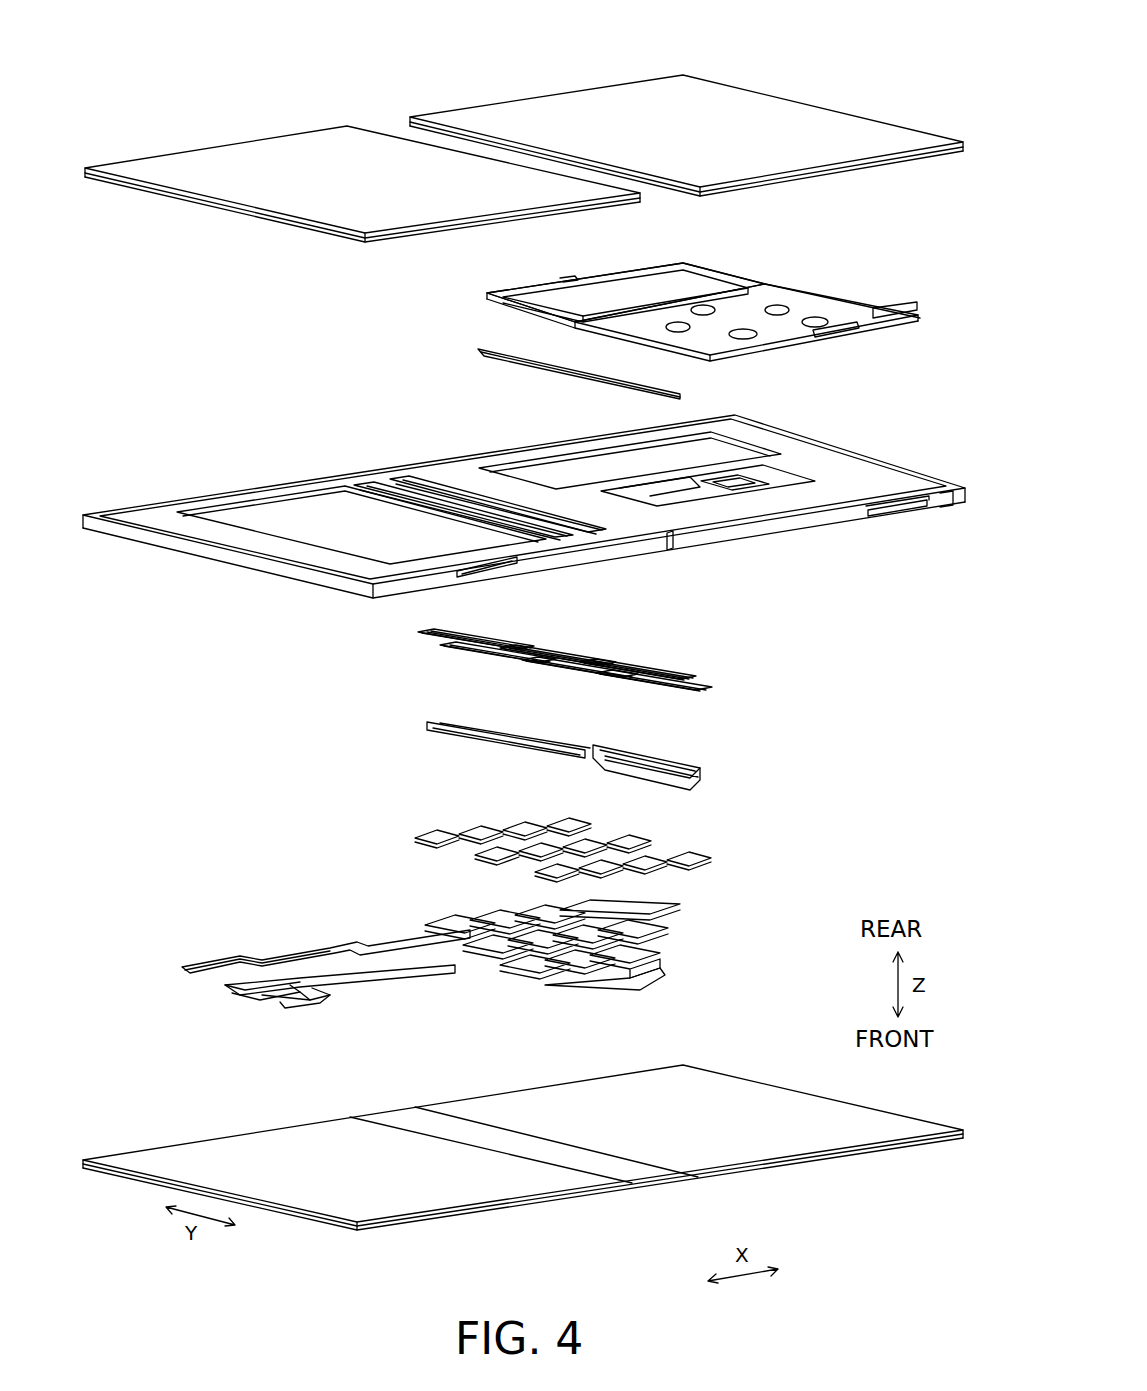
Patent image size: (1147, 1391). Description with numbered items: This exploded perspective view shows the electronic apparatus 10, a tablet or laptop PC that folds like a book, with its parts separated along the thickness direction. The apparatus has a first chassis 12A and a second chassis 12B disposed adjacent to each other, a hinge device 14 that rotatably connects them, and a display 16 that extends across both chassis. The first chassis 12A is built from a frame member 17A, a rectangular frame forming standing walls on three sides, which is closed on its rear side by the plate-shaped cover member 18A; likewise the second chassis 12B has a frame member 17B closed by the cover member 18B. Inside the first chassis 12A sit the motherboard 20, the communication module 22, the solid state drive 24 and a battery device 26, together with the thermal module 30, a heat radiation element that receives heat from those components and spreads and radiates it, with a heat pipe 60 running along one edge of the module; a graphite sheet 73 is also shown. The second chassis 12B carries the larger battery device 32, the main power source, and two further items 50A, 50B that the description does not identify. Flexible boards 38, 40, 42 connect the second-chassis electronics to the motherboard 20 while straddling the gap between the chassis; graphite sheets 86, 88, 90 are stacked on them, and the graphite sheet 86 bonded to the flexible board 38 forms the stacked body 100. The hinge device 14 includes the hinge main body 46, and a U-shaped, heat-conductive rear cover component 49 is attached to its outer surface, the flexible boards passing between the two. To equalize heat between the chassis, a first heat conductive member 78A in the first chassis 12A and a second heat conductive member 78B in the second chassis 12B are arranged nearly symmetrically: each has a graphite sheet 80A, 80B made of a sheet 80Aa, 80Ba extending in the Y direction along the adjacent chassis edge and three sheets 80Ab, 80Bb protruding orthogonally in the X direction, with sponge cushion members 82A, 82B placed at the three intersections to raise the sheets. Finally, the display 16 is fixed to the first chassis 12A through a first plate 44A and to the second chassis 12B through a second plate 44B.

The electronic apparatus 10 is at (167, 32).
The cover member 18A is at (634, 97).
The cover member 18B is at (233, 152).
The thermal module 30 is at (656, 277).
The heat pipe 60 is at (487, 300).
The graphite sheet 73 is at (505, 365).
The battery device 26 is at (680, 440).
The first chassis 12A is at (524, 474).
The second chassis 12B is at (524, 487).
The first rail 50A is at (400, 466).
The second rail 50B is at (385, 468).
The battery device 32 is at (292, 505).
The solid state drive 24 is at (790, 475).
The motherboard 20 is at (880, 492).
The communication module 22 is at (837, 507).
The frame member 17A is at (820, 530).
The frame member 17B is at (290, 570).
The cushion member 82A is at (632, 624).
The cushion member 82B is at (410, 658).
The sheet 80Ab is at (560, 624).
The sheet 80Bb is at (430, 640).
The first heat conductive member 78A is at (567, 657).
The second heat conductive member 78B is at (567, 657).
The graphite sheet 80A is at (766, 689).
The sheet 80Aa is at (700, 672).
The graphite sheet 80B is at (745, 710).
The sheet 80Ba is at (700, 690).
The rear cover component 49 is at (703, 780).
The graphite sheet 90 is at (545, 828).
The graphite sheet 88 is at (612, 845).
The graphite sheet 86 is at (672, 858).
The stacked body 100 is at (506, 914).
The flexible board 38 is at (604, 956).
The hinge device 14 is at (604, 956).
The hinge main body 46 is at (650, 980).
The flexible board 42 is at (313, 952).
The flexible board 40 is at (390, 983).
The first plate 44A is at (523, 1166).
The second plate 44B is at (523, 1166).
The display 16 is at (664, 1178).